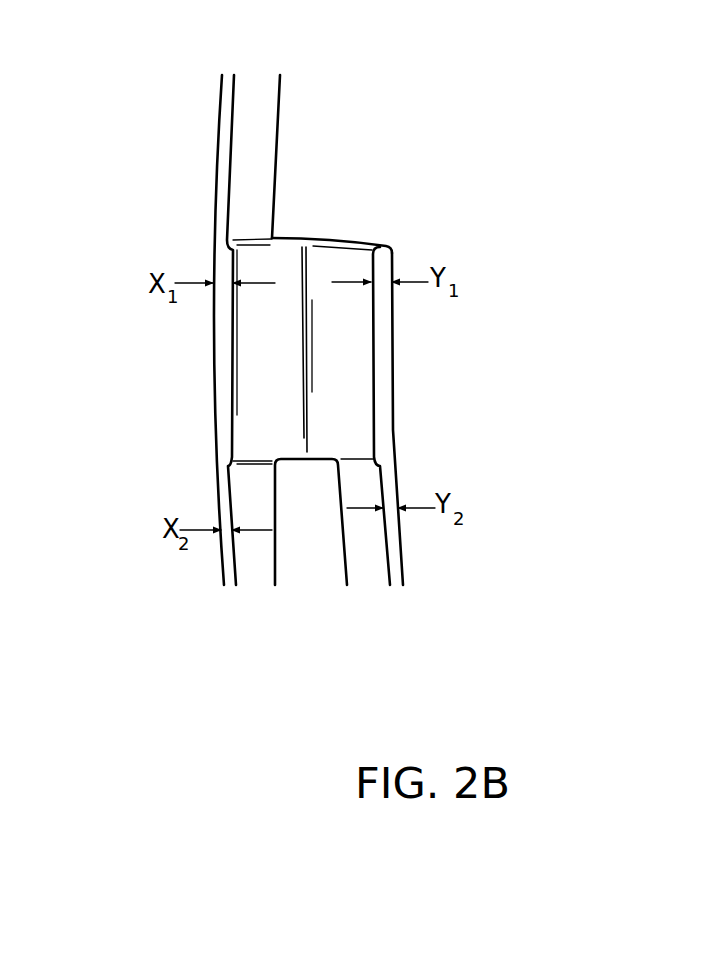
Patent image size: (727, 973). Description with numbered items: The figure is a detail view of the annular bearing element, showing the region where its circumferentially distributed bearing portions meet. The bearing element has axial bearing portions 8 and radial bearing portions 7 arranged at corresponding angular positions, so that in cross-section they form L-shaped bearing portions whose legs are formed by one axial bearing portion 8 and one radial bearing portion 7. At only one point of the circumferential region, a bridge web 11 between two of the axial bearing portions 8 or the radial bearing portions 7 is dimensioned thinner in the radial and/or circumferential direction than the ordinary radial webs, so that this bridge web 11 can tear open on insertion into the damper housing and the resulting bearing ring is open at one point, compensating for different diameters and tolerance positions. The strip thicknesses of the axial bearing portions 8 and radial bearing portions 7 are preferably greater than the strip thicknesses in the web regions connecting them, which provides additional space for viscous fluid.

The bridge web 11 is at (245, 112).
The radial bearing portion 7 is at (251, 328).
The axial bearing portion 8 is at (352, 339).